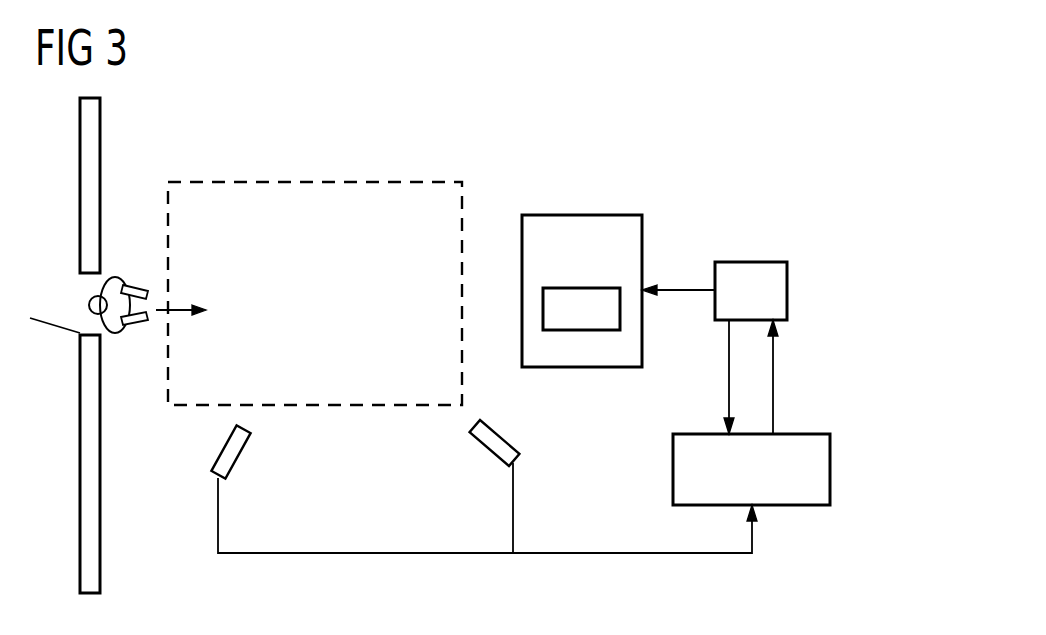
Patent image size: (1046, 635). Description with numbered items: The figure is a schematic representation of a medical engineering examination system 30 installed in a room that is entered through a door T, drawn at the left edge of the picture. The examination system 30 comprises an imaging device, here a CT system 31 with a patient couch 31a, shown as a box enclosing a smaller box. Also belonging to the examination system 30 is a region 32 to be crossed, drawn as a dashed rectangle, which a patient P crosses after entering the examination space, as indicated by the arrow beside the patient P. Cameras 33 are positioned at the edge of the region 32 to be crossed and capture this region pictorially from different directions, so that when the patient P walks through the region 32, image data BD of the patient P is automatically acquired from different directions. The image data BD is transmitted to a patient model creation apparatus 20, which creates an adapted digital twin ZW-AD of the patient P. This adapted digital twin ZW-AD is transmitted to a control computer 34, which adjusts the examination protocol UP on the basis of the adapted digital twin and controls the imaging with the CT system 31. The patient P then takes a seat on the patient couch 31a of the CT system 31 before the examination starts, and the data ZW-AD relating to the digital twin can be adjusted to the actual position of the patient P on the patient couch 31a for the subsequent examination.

The patient model creation apparatus 20 is at (673, 470).
The medical engineering examination system 30 is at (662, 142).
The CT system 31 is at (582, 215).
The patient couch 31a is at (583, 288).
The region to be crossed 32 is at (322, 182).
The cameras 33 is at (247, 456).
The control computer 34 is at (753, 262).
The patient P is at (130, 278).
The door T is at (61, 327).
The examination protocol UP is at (729, 386).
The adapted digital twin ZW-AD is at (773, 386).
The image data BD is at (362, 553).